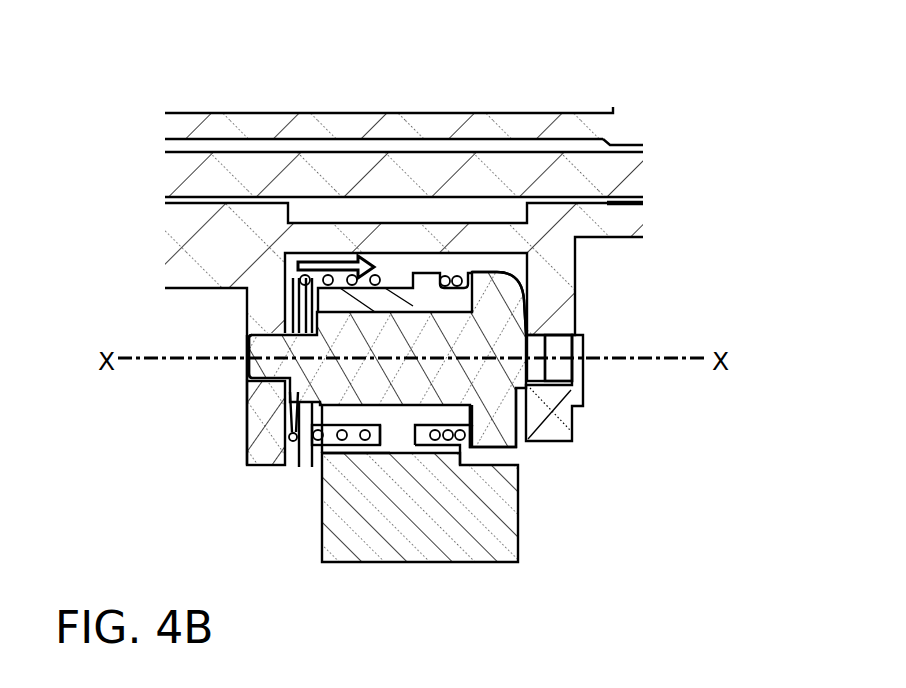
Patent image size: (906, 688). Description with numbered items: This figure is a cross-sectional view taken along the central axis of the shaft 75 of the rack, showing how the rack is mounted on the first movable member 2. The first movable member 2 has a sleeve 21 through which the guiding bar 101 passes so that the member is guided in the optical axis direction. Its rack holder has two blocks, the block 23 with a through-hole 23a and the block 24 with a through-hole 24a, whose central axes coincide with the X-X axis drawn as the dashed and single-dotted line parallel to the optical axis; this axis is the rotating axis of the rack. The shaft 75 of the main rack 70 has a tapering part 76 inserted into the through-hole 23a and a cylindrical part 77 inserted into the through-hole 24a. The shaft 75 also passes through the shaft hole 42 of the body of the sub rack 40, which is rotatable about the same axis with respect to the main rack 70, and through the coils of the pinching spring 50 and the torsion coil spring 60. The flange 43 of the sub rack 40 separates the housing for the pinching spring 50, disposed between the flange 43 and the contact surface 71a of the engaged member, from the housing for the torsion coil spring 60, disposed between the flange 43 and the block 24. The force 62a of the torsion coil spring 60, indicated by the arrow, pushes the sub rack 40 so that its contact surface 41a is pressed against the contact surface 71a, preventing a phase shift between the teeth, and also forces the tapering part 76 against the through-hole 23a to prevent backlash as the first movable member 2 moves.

The first movable member 2 is at (557, 312).
The sleeve 21 is at (356, 112).
The block 23 is at (563, 428).
The through-hole 23a is at (563, 377).
The block 24 is at (263, 458).
The through-hole 24a is at (245, 372).
The sub rack 40 is at (412, 540).
The contact surface 41a is at (465, 407).
The shaft hole 42 is at (388, 410).
The flange 43 is at (402, 285).
The pinching spring 50 is at (447, 271).
The torsion coil spring 60 is at (338, 272).
The force 62a is at (292, 266).
The main rack 70 is at (495, 295).
The contact surface 71a is at (470, 405).
The shaft 75 is at (437, 383).
The tapering part 76 is at (523, 333).
The cylindrical part 77 is at (278, 370).
The guiding bar 101 is at (265, 162).